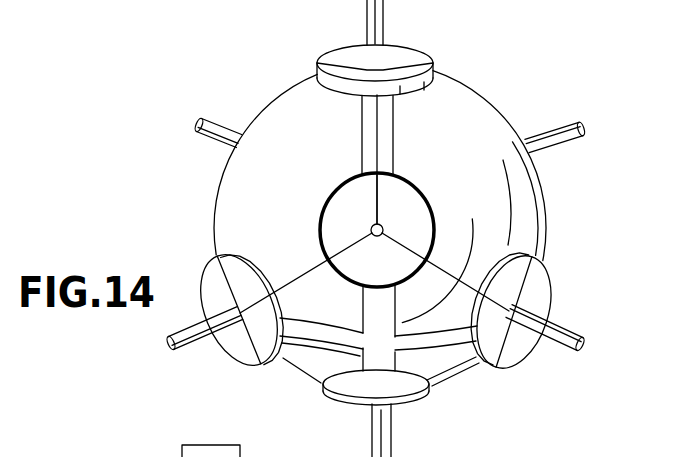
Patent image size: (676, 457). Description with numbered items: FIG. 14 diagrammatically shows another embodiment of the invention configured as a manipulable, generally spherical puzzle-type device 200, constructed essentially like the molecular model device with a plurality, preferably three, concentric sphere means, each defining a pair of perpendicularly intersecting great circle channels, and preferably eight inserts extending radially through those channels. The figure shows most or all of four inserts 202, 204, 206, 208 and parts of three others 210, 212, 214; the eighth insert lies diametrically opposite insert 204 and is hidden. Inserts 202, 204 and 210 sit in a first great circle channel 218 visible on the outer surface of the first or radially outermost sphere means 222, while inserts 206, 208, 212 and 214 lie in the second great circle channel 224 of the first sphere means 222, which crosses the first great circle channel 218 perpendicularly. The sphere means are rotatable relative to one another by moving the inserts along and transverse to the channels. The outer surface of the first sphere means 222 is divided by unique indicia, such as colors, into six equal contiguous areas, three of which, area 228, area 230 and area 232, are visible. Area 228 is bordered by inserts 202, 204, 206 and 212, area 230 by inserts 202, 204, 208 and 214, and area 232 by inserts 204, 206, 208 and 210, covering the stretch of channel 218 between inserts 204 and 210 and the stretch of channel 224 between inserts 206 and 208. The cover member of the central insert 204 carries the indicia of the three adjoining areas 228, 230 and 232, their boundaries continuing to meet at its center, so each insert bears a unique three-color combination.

The puzzle-type device 200 is at (490, 96).
The insert 202 is at (342, 72).
The insert 204 is at (333, 225).
The insert 206 is at (212, 258).
The insert 208 is at (542, 270).
The insert 210 is at (382, 428).
The insert 212 is at (198, 130).
The insert 214 is at (565, 145).
The first great circle channel 218 is at (380, 122).
The first sphere means 222 is at (240, 200).
The second great circle channel 224 is at (323, 338).
The area 228 is at (331, 173).
The area 230 is at (483, 189).
The area 232 is at (337, 317).